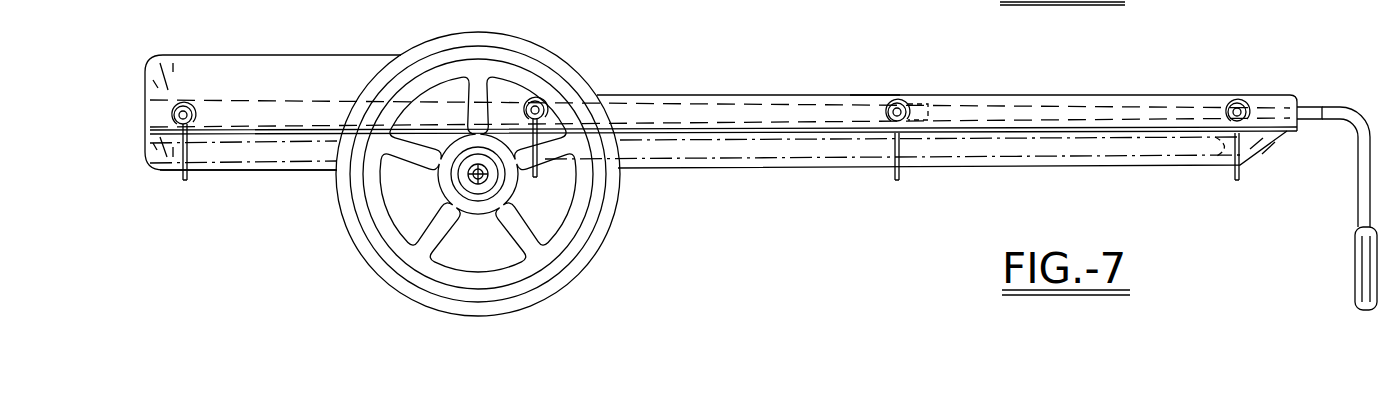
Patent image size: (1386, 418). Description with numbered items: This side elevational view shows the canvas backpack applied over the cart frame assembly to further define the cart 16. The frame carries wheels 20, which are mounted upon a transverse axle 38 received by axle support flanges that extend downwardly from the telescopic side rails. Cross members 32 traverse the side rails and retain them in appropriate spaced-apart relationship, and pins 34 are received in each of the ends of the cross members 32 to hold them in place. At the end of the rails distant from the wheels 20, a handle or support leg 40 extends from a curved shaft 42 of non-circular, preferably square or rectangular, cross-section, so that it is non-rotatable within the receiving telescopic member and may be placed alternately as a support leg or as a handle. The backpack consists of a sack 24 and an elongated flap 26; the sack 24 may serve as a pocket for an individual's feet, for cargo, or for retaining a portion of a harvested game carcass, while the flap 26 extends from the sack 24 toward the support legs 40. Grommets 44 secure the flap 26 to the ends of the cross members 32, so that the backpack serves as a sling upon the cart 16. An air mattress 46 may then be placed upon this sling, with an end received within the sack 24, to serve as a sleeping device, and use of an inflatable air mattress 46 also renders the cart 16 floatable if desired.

The cart 16 is at (745, 80).
The wheels 20 is at (541, 49).
The sack 24 is at (291, 50).
The elongated flap 26 is at (871, 89).
The cross members 32 is at (182, 182).
The pins 34 is at (187, 126).
The axle 38 is at (481, 176).
The handles or support legs 40 is at (1362, 193).
The curved shaft 42 is at (1302, 105).
The grommets 44 is at (191, 106).
The air mattress 46 is at (1016, 147).